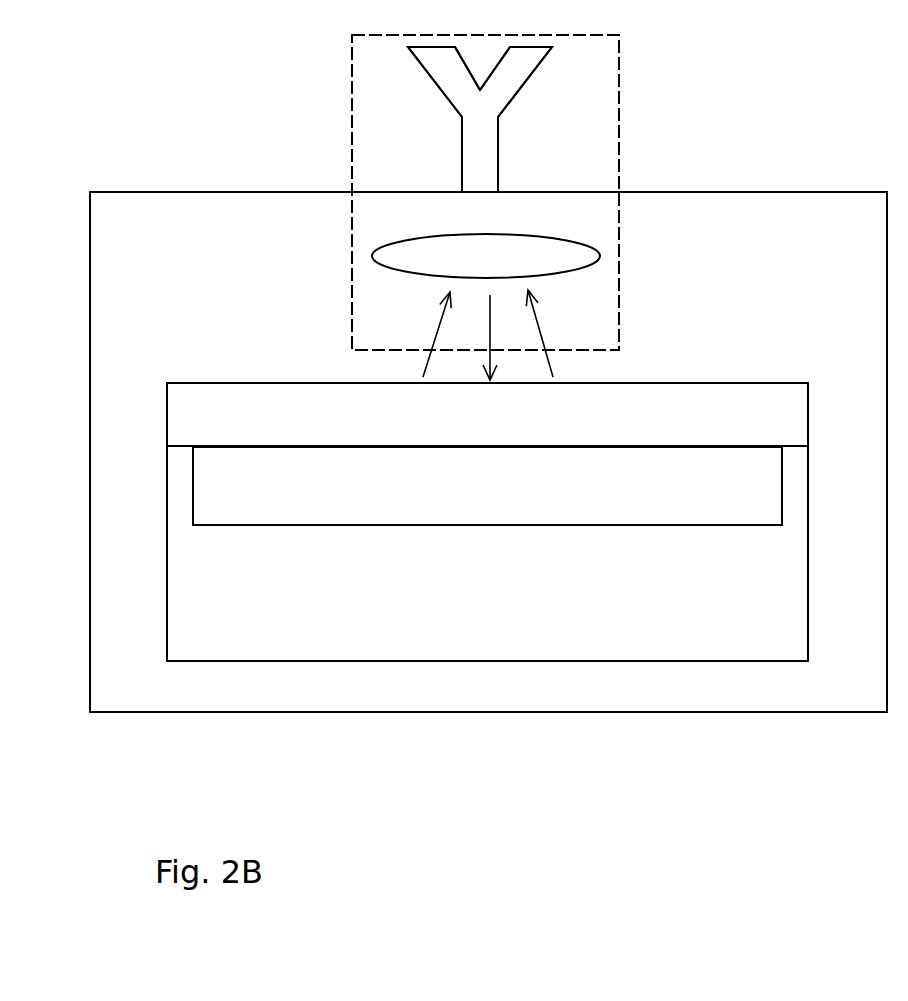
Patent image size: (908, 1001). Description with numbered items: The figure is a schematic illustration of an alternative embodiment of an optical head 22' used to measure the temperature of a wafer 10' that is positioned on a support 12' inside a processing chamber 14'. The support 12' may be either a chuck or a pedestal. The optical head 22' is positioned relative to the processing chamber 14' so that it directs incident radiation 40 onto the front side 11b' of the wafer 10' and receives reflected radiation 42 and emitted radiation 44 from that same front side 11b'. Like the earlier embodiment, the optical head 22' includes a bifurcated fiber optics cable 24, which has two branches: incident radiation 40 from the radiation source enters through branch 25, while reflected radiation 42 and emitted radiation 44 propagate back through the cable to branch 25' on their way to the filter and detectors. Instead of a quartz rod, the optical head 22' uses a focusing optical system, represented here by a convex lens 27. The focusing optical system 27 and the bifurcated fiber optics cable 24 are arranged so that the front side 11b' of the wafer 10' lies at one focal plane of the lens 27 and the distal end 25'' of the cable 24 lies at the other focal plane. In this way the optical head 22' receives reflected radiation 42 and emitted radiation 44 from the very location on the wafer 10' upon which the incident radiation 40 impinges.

The processing chamber 14' is at (496, 411).
The optical head 22' is at (534, 192).
The bifurcated fiber optics cable 24 is at (475, 153).
The branch 25 is at (421, 82).
The branch 25' is at (539, 82).
The distal end 25'' is at (436, 175).
The convex lens 27 is at (502, 272).
The incident radiation 40 is at (475, 337).
The reflected radiation 42 is at (578, 327).
The emitted radiation 44 is at (438, 327).
The wafer 10' is at (487, 414).
The support 12' is at (487, 553).
The front side 11b' is at (487, 327).